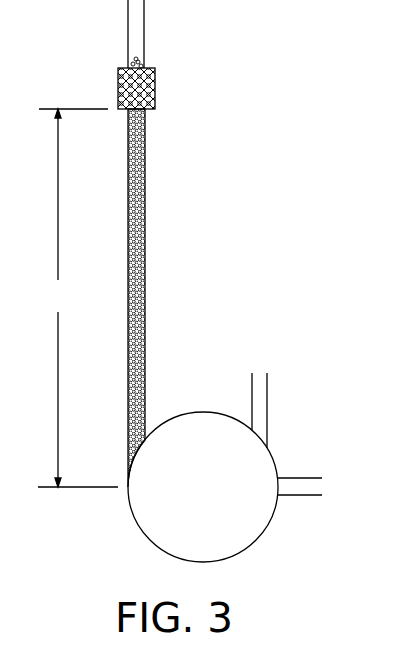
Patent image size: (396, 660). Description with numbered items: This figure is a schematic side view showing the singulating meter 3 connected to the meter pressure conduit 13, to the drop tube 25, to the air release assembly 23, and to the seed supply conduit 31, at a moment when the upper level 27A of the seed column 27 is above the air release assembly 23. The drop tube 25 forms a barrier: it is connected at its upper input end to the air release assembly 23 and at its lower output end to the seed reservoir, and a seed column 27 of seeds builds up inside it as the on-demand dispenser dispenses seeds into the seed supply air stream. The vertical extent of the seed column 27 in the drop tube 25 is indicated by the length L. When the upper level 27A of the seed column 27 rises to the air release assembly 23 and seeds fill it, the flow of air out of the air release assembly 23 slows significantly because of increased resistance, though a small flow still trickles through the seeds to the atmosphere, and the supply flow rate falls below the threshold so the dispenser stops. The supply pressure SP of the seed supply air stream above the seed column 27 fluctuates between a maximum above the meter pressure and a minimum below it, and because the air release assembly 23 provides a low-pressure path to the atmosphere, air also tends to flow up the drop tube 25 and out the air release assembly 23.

The supply pressure SP is at (135, 39).
The upper level of the seed column 27A is at (144, 62).
The air release assembly 23 is at (118, 88).
The drop tube 25 is at (146, 300).
The seed column 27 is at (146, 218).
The length L is at (78, 298).
The vessel 3 is at (253, 542).
The tube 13 is at (268, 400).
The outlet pipe 31 is at (302, 478).